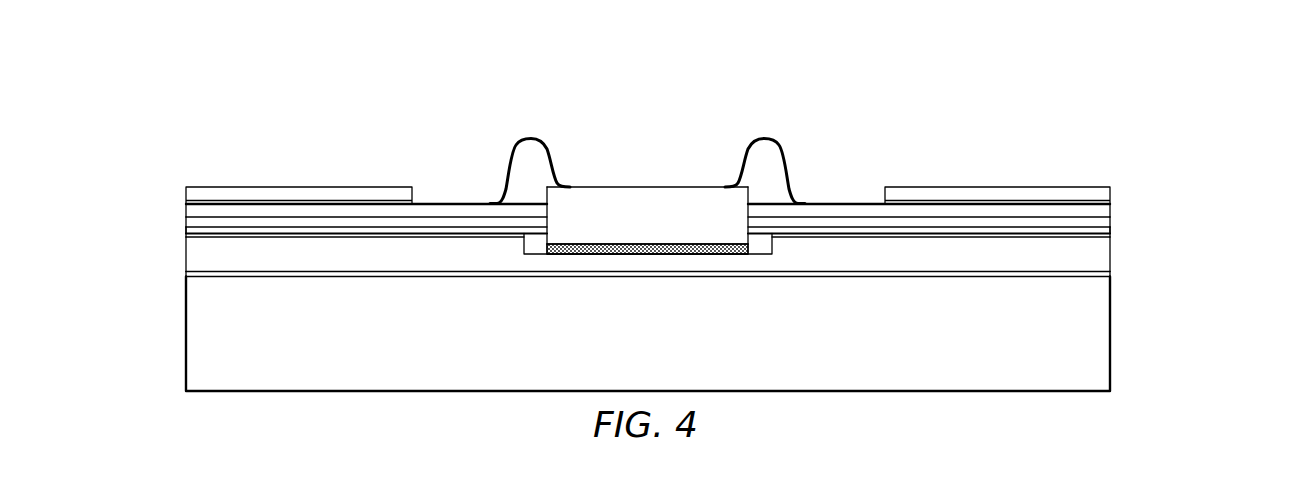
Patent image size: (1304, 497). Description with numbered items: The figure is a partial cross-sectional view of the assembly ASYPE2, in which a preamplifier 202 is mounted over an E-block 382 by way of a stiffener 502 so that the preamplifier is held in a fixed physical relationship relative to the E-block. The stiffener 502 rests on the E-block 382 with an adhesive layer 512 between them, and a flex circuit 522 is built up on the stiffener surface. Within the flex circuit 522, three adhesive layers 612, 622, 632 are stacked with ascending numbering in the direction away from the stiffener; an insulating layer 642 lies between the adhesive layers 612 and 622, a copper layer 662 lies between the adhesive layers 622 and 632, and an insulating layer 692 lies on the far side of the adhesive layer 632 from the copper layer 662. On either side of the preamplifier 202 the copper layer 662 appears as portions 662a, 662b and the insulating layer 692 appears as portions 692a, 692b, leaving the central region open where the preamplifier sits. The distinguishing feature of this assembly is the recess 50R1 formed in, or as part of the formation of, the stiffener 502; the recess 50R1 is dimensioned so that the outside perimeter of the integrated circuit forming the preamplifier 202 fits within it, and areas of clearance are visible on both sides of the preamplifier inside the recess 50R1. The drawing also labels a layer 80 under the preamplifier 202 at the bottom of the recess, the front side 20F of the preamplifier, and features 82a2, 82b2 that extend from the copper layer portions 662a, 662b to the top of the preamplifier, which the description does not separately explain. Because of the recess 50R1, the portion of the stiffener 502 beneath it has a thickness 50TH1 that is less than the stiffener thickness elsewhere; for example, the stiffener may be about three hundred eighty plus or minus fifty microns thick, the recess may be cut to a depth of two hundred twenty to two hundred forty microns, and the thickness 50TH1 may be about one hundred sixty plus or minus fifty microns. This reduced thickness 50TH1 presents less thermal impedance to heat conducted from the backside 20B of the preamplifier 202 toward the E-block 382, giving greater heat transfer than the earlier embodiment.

The assembly ASYPE2 is at (867, 80).
The E-block 382 is at (655, 368).
The adhesive layer 512 is at (355, 278).
The stiffener 502 is at (196, 260).
The recess 50R1 is at (773, 293).
The thickness 50TH1 is at (862, 225).
The insulating layer 642 is at (196, 227).
The flex circuit 522 is at (1199, 190).
The adhesive layer 632 is at (1112, 200).
The adhesive layer 622 is at (1112, 217).
The adhesive layer 612 is at (1112, 234).
The copper layer 662 is at (120, 211).
The passivation layer left portion 662a is at (453, 208).
The passivation layer right portion 662b is at (845, 210).
The insulating layer 692 is at (165, 193).
The left contact pad 692a is at (272, 195).
The right contact pad 692b is at (968, 193).
The preamplifier 202 is at (655, 228).
The die front side 20F is at (615, 187).
The backside 20B is at (692, 244).
The die attach material 80 is at (603, 255).
The left bond wire 82a2 is at (532, 139).
The right bond wire 82b2 is at (767, 140).